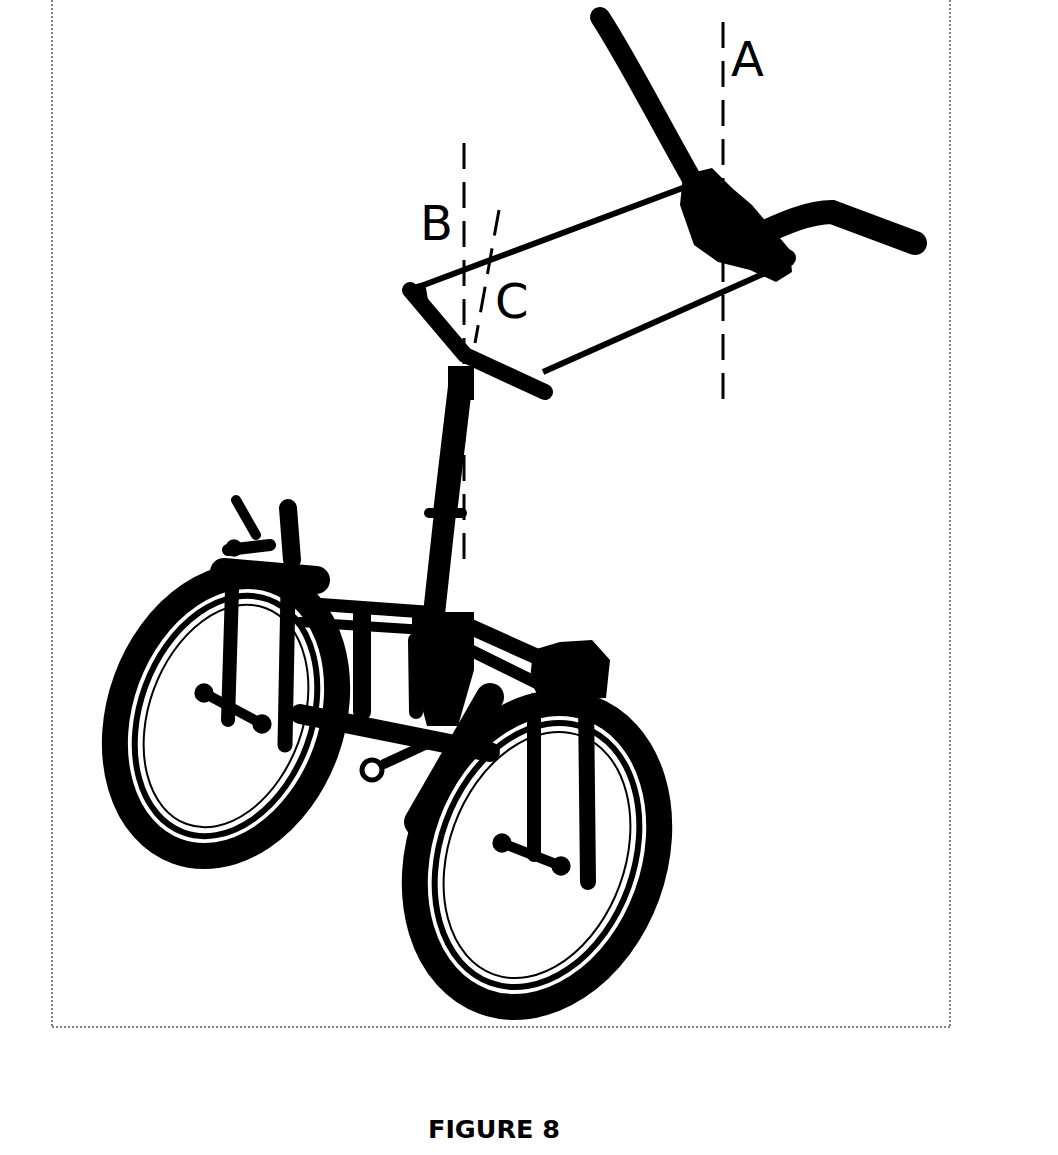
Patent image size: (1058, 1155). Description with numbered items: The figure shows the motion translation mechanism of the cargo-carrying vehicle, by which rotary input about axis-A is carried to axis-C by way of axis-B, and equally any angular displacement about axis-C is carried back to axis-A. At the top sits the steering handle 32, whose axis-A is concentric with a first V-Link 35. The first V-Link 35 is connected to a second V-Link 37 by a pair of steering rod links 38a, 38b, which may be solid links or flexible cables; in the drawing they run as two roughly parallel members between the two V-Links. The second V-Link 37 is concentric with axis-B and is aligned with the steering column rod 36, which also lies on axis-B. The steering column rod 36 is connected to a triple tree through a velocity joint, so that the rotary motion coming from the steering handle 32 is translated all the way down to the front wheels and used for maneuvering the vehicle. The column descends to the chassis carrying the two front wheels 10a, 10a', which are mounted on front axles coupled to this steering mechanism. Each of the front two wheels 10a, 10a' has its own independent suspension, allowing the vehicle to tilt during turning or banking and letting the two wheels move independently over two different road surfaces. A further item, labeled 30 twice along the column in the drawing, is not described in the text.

The front wheel 10a is at (210, 741).
The front wheel 10a' is at (505, 872).
The steering column 30 is at (416, 499).
The steering handle 32 is at (842, 196).
The first V-Link 35 is at (782, 289).
The steering column rod 36 is at (447, 379).
The second V-Link 37 is at (402, 330).
The steering rod link 38a is at (630, 350).
The steering rod link 38b is at (598, 217).